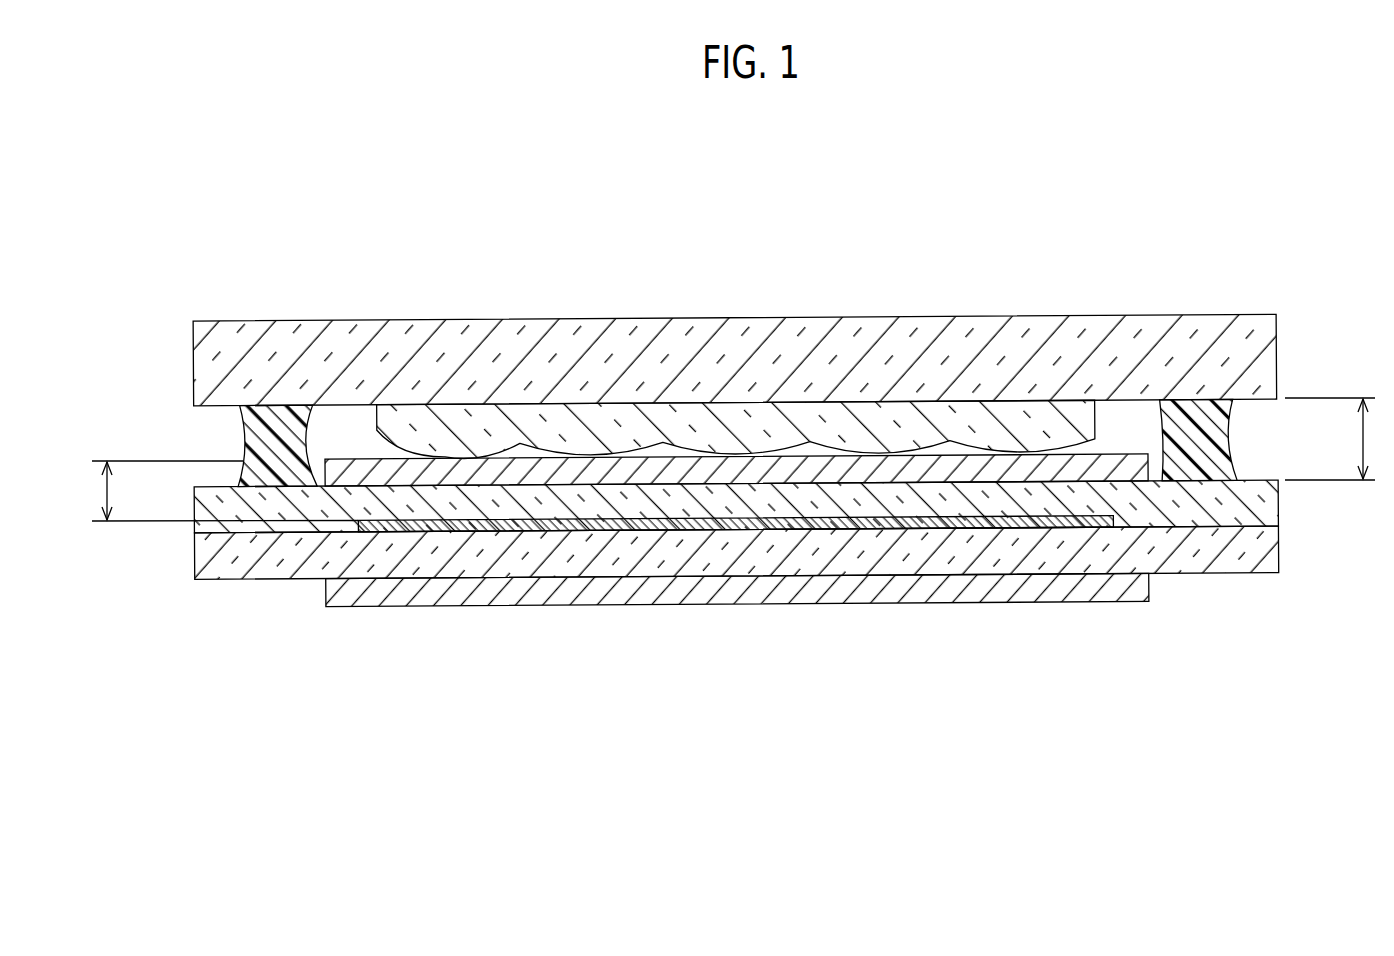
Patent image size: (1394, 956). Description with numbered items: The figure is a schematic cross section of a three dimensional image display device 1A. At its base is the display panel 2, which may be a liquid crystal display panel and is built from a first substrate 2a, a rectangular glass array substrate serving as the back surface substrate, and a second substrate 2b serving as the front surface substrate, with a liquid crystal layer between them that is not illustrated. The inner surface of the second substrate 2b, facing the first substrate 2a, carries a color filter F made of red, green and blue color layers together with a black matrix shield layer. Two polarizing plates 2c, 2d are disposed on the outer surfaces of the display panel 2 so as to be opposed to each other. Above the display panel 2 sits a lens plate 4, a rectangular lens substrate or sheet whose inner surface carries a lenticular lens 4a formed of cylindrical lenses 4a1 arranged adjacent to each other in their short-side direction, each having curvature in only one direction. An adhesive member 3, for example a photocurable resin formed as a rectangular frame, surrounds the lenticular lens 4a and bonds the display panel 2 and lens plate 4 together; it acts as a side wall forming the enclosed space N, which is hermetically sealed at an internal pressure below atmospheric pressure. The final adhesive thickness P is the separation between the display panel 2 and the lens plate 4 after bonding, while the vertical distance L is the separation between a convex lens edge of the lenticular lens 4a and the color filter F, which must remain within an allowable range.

The display device 1A is at (1236, 184).
The display panel 2 is at (780, 588).
The first substrate 2a is at (1262, 545).
The second substrate 2b is at (1257, 507).
The polarizing plate 2c is at (437, 475).
The polarizing plate 2d is at (593, 590).
The adhesive member 3 is at (248, 452).
The lens plate 4 is at (1262, 338).
The lenticular lens 4a is at (1098, 419).
The cylindrical lens 4a1 is at (1025, 452).
The enclosed space N is at (347, 433).
The color filter F is at (482, 527).
The final adhesive thickness P is at (1334, 439).
The vertical distance L is at (220, 491).